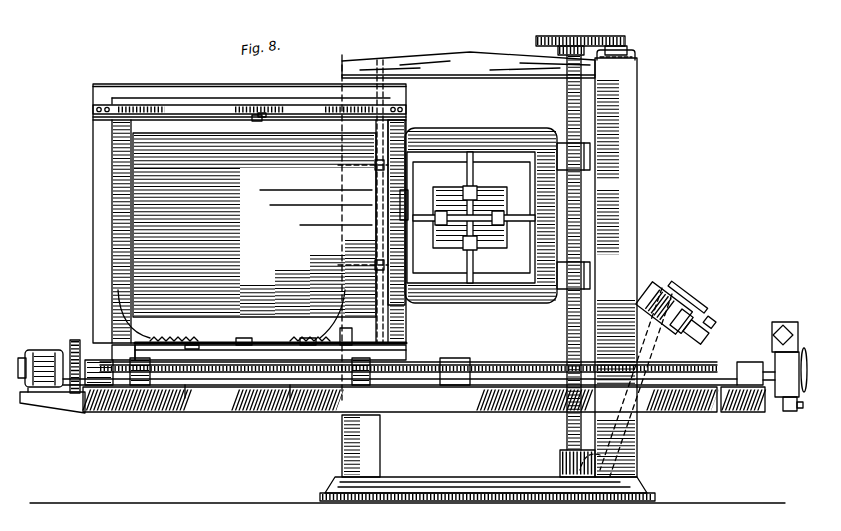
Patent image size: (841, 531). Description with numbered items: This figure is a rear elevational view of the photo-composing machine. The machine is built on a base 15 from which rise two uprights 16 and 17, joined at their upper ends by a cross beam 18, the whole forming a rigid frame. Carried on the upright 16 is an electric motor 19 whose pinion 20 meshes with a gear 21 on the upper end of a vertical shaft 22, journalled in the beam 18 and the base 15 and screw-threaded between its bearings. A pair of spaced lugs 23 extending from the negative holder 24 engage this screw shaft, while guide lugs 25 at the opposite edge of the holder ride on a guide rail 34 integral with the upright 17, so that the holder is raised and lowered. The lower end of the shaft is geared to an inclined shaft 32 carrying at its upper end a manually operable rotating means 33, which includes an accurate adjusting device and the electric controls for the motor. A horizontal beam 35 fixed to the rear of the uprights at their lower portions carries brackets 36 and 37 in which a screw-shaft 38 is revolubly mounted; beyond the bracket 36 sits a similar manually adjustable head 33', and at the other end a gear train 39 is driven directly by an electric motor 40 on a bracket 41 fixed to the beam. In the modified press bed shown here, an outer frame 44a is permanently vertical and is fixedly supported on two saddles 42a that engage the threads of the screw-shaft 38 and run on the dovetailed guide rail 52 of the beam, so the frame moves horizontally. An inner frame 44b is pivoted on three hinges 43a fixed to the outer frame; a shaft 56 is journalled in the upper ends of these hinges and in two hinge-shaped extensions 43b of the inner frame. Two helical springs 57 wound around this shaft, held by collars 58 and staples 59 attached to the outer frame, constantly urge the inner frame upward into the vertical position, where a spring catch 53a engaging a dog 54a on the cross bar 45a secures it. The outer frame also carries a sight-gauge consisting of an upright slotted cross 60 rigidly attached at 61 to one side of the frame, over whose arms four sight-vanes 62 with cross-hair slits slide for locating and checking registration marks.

The base 15 is at (570, 500).
The upright 16 is at (620, 176).
The upright 17 is at (348, 452).
The cross beam 18 is at (500, 62).
The electric motor 19 is at (636, 50).
The pinion 20 is at (616, 46).
The gear 21 is at (562, 36).
The vertical shaft 22 is at (566, 101).
The lugs 23 is at (590, 156).
The negative holder 24 is at (498, 300).
The guide lugs 25 is at (348, 227).
The inclined shaft 32 is at (630, 395).
The manually operable rotating means 33 is at (680, 311).
The manually adjustable head 33' is at (789, 349).
The guide rail 34 is at (380, 240).
The horizontal beam 35 is at (265, 414).
The bracket 36 is at (747, 362).
The bracket 37 is at (100, 388).
The screw-shaft 38 is at (478, 364).
The gear train 39 is at (74, 340).
The electric motor 40 is at (46, 352).
The bracket 41 is at (58, 404).
The saddles 42a is at (140, 386).
The hinges 43a is at (115, 345).
The hinge-shaped extensions 43b is at (150, 338).
The outer frame 44a is at (100, 178).
The inner frame 44b is at (120, 210).
The cross bar 45a is at (200, 108).
The dovetailed guide rail 52 is at (460, 386).
The spring catch 53a is at (250, 118).
The dog 54a is at (264, 113).
The shaft 56 is at (243, 338).
The helical springs 57 is at (175, 340).
The collars 58 is at (300, 340).
The staples 59 is at (185, 400).
The upright cross 60 is at (475, 262).
The attachment point 61 is at (410, 222).
The sight-vanes 62 is at (478, 190).